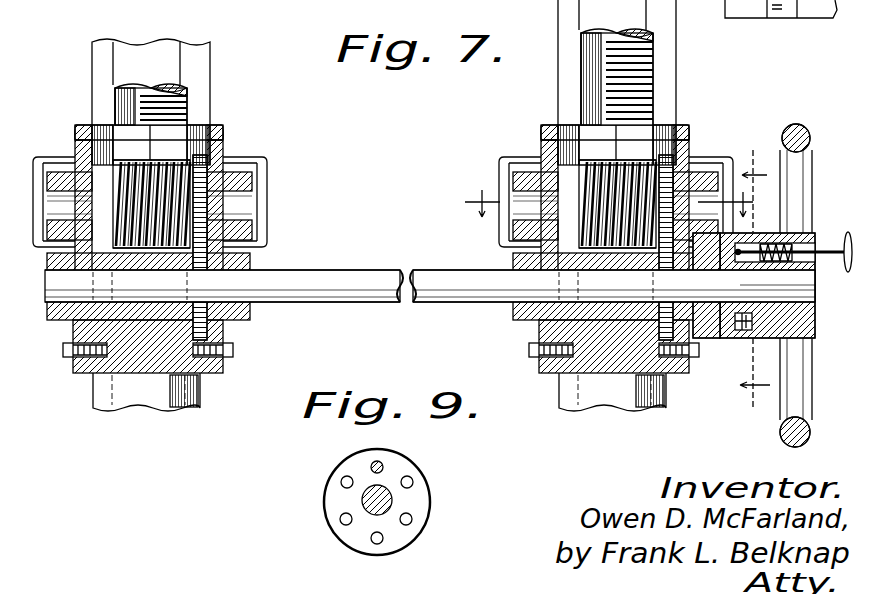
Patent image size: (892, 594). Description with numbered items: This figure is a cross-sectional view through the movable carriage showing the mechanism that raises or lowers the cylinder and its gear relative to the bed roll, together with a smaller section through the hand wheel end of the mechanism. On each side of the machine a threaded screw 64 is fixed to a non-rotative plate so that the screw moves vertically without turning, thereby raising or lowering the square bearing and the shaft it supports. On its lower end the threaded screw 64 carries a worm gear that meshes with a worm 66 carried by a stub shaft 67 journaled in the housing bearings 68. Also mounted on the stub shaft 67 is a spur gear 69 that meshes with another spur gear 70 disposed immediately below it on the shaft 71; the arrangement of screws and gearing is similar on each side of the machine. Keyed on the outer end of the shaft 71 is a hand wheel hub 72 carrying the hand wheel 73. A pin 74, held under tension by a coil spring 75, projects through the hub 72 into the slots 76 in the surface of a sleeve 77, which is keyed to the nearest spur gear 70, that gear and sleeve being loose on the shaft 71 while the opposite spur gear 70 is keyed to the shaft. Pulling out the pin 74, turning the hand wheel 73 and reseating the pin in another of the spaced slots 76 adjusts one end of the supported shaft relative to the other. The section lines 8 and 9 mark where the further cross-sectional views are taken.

In FIG. 7, the threaded screw 64 is at (135, 93).
In FIG. 7, the worm 66 is at (207, 127).
In FIG. 7, the stub shaft 67 is at (247, 200).
In FIG. 7, the housing bearings 68 is at (213, 158).
In FIG. 7, the spur gear 69 is at (180, 168).
In FIG. 7, the spur gear 70 is at (225, 325).
In FIG. 7, the shaft 71 is at (300, 272).
In FIG. 9, the shaft 71 is at (372, 512).
In FIG. 7, the hand wheel hub 72 is at (813, 325).
In FIG. 7, the hand wheel 73 is at (780, 435).
In FIG. 7, the pin 74 is at (830, 249).
In FIG. 9, the pin 74 is at (372, 462).
In FIG. 7, the coil spring 75 is at (778, 242).
In FIG. 7, the slots 76 is at (692, 345).
In FIG. 9, the slots 76 is at (410, 482).
In FIG. 7, the sleeve 77 is at (700, 372).
In FIG. 9, the sleeve 77 is at (432, 510).
In FIG. 7, the section line 8— 8 is at (609, 204).
In FIG. 7, the section line 9— 9 is at (755, 282).